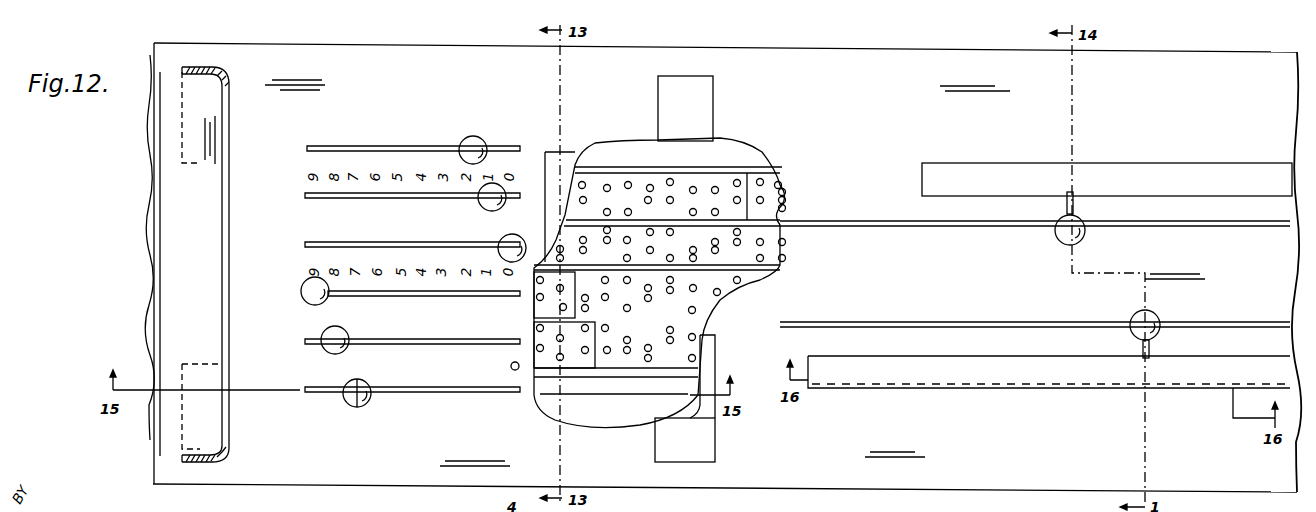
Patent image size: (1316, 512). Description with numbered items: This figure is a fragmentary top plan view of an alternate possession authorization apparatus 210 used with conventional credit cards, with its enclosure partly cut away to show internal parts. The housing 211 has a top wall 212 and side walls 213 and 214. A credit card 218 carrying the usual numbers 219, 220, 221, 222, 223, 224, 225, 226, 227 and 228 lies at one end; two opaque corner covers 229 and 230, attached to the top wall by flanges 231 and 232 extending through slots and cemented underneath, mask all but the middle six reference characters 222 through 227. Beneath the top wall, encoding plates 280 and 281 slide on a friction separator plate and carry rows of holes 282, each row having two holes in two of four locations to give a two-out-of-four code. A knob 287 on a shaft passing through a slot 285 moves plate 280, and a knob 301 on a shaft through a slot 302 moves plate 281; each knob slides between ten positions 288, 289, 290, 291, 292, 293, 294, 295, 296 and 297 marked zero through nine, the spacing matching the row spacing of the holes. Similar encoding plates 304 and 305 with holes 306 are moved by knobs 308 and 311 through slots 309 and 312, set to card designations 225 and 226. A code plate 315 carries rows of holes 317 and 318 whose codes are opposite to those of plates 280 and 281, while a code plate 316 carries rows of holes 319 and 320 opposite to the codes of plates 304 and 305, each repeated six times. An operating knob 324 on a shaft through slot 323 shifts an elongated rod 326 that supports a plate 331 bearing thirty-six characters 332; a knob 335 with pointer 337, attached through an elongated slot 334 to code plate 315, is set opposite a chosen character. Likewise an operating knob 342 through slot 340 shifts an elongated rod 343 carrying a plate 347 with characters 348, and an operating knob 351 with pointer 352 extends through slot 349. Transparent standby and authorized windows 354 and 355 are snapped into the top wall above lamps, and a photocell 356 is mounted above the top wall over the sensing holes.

The authorization apparatus 210 is at (112, 287).
The housing 211 is at (213, 494).
The top wall 212 is at (346, 45).
The side wall 213 is at (1008, 491).
The side wall 214 is at (860, 50).
The credit card 218 is at (166, 299).
The credit card number 219 is at (192, 428).
The credit card number 220 is at (192, 405).
The credit card number 221 is at (192, 378).
The reference character 222 is at (192, 336).
The reference character 223 is at (192, 315).
The reference character 224 is at (194, 290).
The reference character 225 is at (192, 246).
The reference character 226 is at (192, 221).
The reference character 227 is at (192, 201).
The credit card number 228 is at (192, 108).
The opaque corner cover 229 is at (180, 137).
The opaque corner cover 230 is at (150, 458).
The flange 231 is at (225, 70).
The flange 232 is at (192, 456).
The encoding plate 280 is at (537, 333).
The encoding plate 281 is at (532, 308).
The holes 282 is at (540, 289).
The slot 285 is at (396, 341).
The knob 287 is at (325, 331).
The position 288 is at (518, 372).
The position 289 is at (492, 374).
The position 290 is at (470, 374).
The position 291 is at (447, 374).
The position 292 is at (428, 374).
The position 293 is at (402, 374).
The position 294 is at (382, 374).
The position 295 is at (358, 374).
The position 296 is at (338, 374).
The position 297 is at (312, 368).
The knob 301 is at (301, 293).
The slot 302 is at (359, 298).
The encoding plate 304 is at (792, 283).
The encoding plate 305 is at (660, 194).
The holes 306 is at (648, 198).
The knob 308 is at (502, 240).
The slot 309 is at (420, 246).
The knob 311 is at (502, 205).
The slot 312 is at (338, 203).
The code plate 315 is at (685, 349).
The code plate 316 is at (786, 185).
The holes 317 is at (670, 344).
The holes 318 is at (670, 293).
The holes 319 is at (790, 256).
The holes 320 is at (786, 207).
The slot 323 is at (330, 396).
The operating knob 324 is at (352, 407).
The elongated rod 326 is at (605, 386).
The plate 331 is at (944, 358).
The characters 332 is at (1040, 382).
The elongated slot 334 is at (976, 326).
The knob 335 is at (1150, 316).
The pointer 337 is at (1150, 354).
The slot 340 is at (414, 146).
The operating knob 342 is at (478, 140).
The elongated rod 343 is at (745, 157).
The plate 347 is at (968, 168).
The character representations 348 is at (1186, 178).
The slot 349 is at (966, 227).
The operating knob 351 is at (1084, 240).
The pointer 352 is at (1066, 208).
The standby window 354 is at (708, 450).
The authorized window 355 is at (712, 82).
The photocell 356 is at (572, 155).